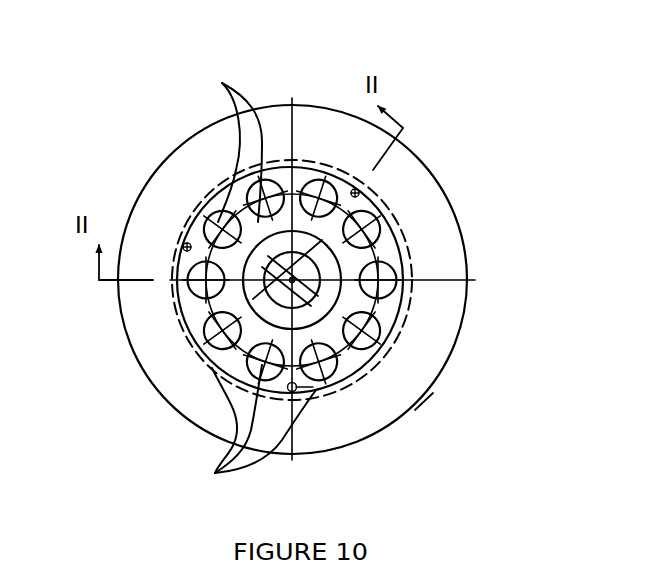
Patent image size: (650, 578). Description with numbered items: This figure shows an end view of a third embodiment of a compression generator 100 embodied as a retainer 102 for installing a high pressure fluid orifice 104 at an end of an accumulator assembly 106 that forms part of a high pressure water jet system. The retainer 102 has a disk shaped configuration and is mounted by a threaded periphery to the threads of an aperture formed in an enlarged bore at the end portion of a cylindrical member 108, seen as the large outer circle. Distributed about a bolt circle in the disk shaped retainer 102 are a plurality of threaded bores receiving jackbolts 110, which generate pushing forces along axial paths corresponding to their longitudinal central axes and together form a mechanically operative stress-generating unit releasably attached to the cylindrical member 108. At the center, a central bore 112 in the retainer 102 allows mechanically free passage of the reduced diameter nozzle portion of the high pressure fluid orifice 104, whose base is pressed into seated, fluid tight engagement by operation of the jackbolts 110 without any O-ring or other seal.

The compression generator 100 is at (396, 205).
The retainer 102 is at (392, 252).
The high pressure fluid orifice 104 is at (250, 303).
The accumulator assembly 106 is at (365, 446).
The cylindrical member 108 is at (413, 392).
The jackbolts 110 is at (239, 282).
The central bore 112 is at (328, 297).